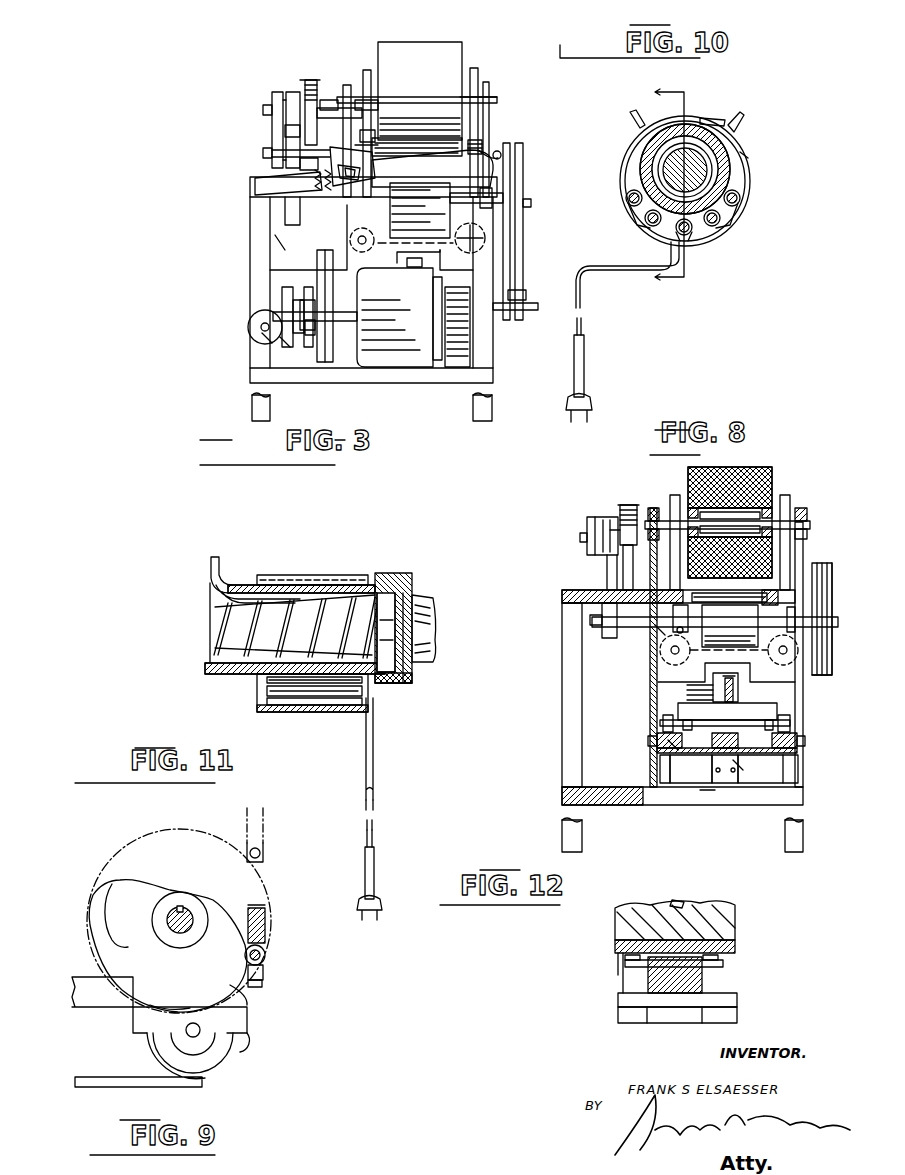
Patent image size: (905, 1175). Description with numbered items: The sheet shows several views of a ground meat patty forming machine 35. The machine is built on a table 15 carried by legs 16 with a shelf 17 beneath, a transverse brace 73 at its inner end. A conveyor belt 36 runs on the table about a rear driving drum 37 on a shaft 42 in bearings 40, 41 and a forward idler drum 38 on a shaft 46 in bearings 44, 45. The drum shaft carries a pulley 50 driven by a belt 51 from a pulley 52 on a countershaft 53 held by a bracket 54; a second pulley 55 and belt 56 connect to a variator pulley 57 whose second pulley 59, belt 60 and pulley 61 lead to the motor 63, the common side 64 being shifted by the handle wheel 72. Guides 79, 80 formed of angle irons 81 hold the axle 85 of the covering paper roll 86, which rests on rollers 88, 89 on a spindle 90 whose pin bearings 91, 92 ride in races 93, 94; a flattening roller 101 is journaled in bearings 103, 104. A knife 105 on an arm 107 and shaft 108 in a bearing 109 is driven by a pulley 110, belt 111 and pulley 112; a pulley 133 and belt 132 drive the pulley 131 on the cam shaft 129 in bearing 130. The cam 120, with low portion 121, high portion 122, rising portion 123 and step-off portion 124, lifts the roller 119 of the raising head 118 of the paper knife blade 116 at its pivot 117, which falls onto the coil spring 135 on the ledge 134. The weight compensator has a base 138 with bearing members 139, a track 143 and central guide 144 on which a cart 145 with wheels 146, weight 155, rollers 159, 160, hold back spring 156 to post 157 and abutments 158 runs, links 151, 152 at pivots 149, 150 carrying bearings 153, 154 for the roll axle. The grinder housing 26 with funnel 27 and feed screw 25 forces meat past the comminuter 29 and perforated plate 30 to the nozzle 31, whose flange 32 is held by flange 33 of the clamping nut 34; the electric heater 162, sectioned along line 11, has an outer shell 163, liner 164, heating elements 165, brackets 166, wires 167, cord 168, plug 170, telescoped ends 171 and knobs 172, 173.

In FIG. 10, the section line 11 is at (683, 184).
In FIG. 8, the table 15 is at (565, 592).
In FIG. 9, the table 15 is at (103, 1000).
In FIG. 3, the legs or supports 16 is at (490, 420).
In FIG. 8, the legs or supports 16 is at (788, 850).
In FIG. 3, the shelf 17 is at (460, 385).
In FIG. 8, the shelf 17 is at (615, 805).
In FIG. 11, the feed screw 25 is at (215, 625).
In FIG. 11, the meat grinder housing 26 is at (228, 580).
In FIG. 11, the feeding funnel or neck 27 is at (213, 560).
In FIG. 11, the cutter or comminuter 29 is at (383, 590).
In FIG. 11, the perforated plate 30 is at (412, 615).
In FIG. 11, the delivery nozzle 31 is at (435, 620).
In FIG. 11, the radial flange 32 is at (395, 600).
In FIG. 11, the inwardly projecting radial flange 33 is at (412, 682).
In FIG. 11, the clamping nut 34 is at (400, 690).
In FIG. 3, the patty forming machine 35 is at (516, 38).
In FIG. 8, the patty forming machine 35 is at (564, 496).
In FIG. 8, the conveyor belt 36 is at (705, 645).
In FIG. 9, the conveyor belt 36 is at (205, 1080).
In FIG. 8, the pulley or drum 37 is at (777, 650).
In FIG. 3, the pulley or drum 38 is at (435, 195).
In FIG. 9, the pulley or drum 38 is at (235, 1045).
In FIG. 8, the bearing 40 is at (797, 630).
In FIG. 8, the bearing 41 is at (660, 625).
In FIG. 3, the shaft 42 is at (530, 203).
In FIG. 3, the bearing 44 is at (500, 193).
In FIG. 3, the bearing 45 is at (330, 240).
In FIG. 9, the bearing 45 is at (240, 1018).
In FIG. 3, the shaft 46 is at (465, 245).
In FIG. 9, the shaft 46 is at (188, 1040).
In FIG. 3, the pulley 50 is at (512, 220).
In FIG. 8, the pulley 50 is at (825, 655).
In FIG. 3, the belt 51 is at (522, 240).
In FIG. 3, the pulley 52 is at (522, 296).
In FIG. 3, the countershaft 53 is at (517, 312).
In FIG. 3, the bracket 54 is at (455, 340).
In FIG. 3, the second pulley 55 is at (305, 290).
In FIG. 3, the belt 56 is at (325, 362).
In FIG. 3, the pulley 57 is at (333, 345).
In FIG. 3, the second pulley 59 is at (283, 340).
In FIG. 3, the belt 60 is at (300, 335).
In FIG. 3, the pulley 61 is at (268, 325).
In FIG. 3, the motor 63 is at (415, 330).
In FIG. 3, the common side 64 is at (318, 345).
In FIG. 3, the handle wheel 72 is at (268, 338).
In FIG. 3, the transverse brace 73 is at (262, 270).
In FIG. 8, the transverse brace 73 is at (580, 650).
In FIG. 3, the guide 79 is at (474, 68).
In FIG. 8, the guide 79 is at (786, 495).
In FIG. 3, the guide 80 is at (367, 70).
In FIG. 8, the guide 80 is at (675, 495).
In FIG. 3, the angle iron 81 is at (347, 82).
In FIG. 8, the angle iron 81 is at (654, 510).
In FIG. 8, the shaft or axle 85 is at (772, 512).
In FIG. 3, the roll of prepared paper 86 is at (430, 48).
In FIG. 8, the roll of prepared paper 86 is at (772, 467).
In FIG. 8, the anti-friction roller 88 is at (772, 592).
In FIG. 8, the anti-friction roller 89 is at (650, 572).
In FIG. 8, the shaft or spindle 90 is at (730, 626).
In FIG. 8, the pin bearing 91 is at (770, 600).
In FIG. 8, the pin bearing 92 is at (673, 615).
In FIG. 8, the race 93 is at (827, 612).
In FIG. 8, the race 94 is at (668, 632).
In FIG. 3, the roller or drum 101 is at (447, 140).
In FIG. 3, the bearing 103 is at (478, 145).
In FIG. 3, the bearing 104 is at (360, 150).
In FIG. 3, the knife 105 is at (365, 135).
In FIG. 3, the arm 107 is at (360, 105).
In FIG. 3, the shaft 108 is at (330, 100).
In FIG. 3, the bearing 109 is at (310, 80).
In FIG. 8, the bearing 109 is at (628, 505).
In FIG. 3, the pulley 110 is at (305, 88).
In FIG. 8, the pulley 110 is at (623, 510).
In FIG. 3, the belt 111 is at (288, 130).
In FIG. 8, the belt 111 is at (605, 556).
In FIG. 3, the pulley 112 is at (290, 215).
In FIG. 8, the pulley 112 is at (600, 610).
In FIG. 3, the paper knife or knife blade 116 is at (485, 155).
In FIG. 3, the pivot 117 is at (498, 152).
In FIG. 3, the raising head 118 is at (355, 152).
In FIG. 9, the raising head 118 is at (265, 918).
In FIG. 3, the roller 119 is at (362, 165).
In FIG. 9, the roller 119 is at (265, 955).
In FIG. 3, the cam 120 is at (390, 203).
In FIG. 9, the cam 120 is at (238, 985).
In FIG. 9, the low arcuate portion 121 is at (183, 884).
In FIG. 9, the high arcuate portion 122 is at (160, 1010).
In FIG. 9, the rising cam portion 123 is at (248, 940).
In FIG. 9, the declining or step off portion 124 is at (112, 930).
In FIG. 3, the shaft 129 is at (264, 152).
In FIG. 9, the shaft 129 is at (195, 905).
In FIG. 3, the bearing 130 is at (310, 180).
In FIG. 3, the pulley 131 is at (310, 162).
In FIG. 3, the belt 132 is at (270, 95).
In FIG. 3, the pulley 133 is at (275, 104).
In FIG. 8, the pulley 133 is at (585, 525).
In FIG. 3, the ledge 134 is at (278, 240).
In FIG. 3, the compressible coil spring 135 is at (318, 190).
In FIG. 8, the base 138 is at (703, 805).
In FIG. 8, the bearing member 139 is at (655, 758).
In FIG. 8, the track member 143 is at (672, 745).
In FIG. 8, the central guide member 144 is at (720, 730).
In FIG. 12, the central guide member 144 is at (660, 985).
In FIG. 8, the miniature cart 145 is at (727, 750).
In FIG. 12, the miniature cart 145 is at (735, 945).
In FIG. 8, the wheel 146 is at (790, 727).
In FIG. 8, the pivot 149 is at (655, 740).
In FIG. 8, the pivot 150 is at (785, 745).
In FIG. 3, the arm or link 151 is at (355, 240).
In FIG. 8, the arm or link 151 is at (655, 690).
In FIG. 8, the arm or link 152 is at (803, 695).
In FIG. 8, the anti-friction bearing 153 is at (645, 515).
In FIG. 8, the anti-friction bearing 154 is at (802, 512).
In FIG. 8, the weight 155 is at (712, 705).
In FIG. 12, the weight 155 is at (715, 922).
In FIG. 8, the hold back spring 156 is at (729, 689).
In FIG. 12, the hold back spring 156 is at (690, 902).
In FIG. 3, the post 157 is at (397, 260).
In FIG. 8, the post 157 is at (738, 765).
In FIG. 12, the post 157 is at (720, 1020).
In FIG. 8, the abutment 158 is at (660, 725).
In FIG. 8, the lateral guiding anti-friction roller 159 is at (755, 769).
In FIG. 12, the lateral guiding anti-friction roller 159 is at (725, 963).
In FIG. 8, the lateral guiding anti-friction roller 160 is at (691, 769).
In FIG. 12, the lateral guiding anti-friction roller 160 is at (628, 963).
In FIG. 10, the electric heater 162 is at (785, 199).
In FIG. 11, the electric heater 162 is at (341, 538).
In FIG. 10, the outer shell 163 is at (745, 170).
In FIG. 11, the outer shell 163 is at (262, 697).
In FIG. 10, the heat insulating liner 164 is at (748, 157).
In FIG. 11, the heat insulating liner 164 is at (300, 712).
In FIG. 10, the heating element 165 is at (696, 242).
In FIG. 11, the heating element 165 is at (345, 700).
In FIG. 10, the bracket 166 is at (722, 225).
In FIG. 11, the bracket 166 is at (262, 685).
In FIG. 10, the wire 167 is at (637, 212).
In FIG. 11, the wire 167 is at (375, 700).
In FIG. 10, the electric cord 168 is at (640, 278).
In FIG. 11, the electric cord 168 is at (375, 778).
In FIG. 10, the pronged plug 170 is at (590, 402).
In FIG. 11, the pronged plug 170 is at (368, 912).
In FIG. 10, the telescoped ends 171 is at (712, 122).
In FIG. 10, the knob 172 is at (635, 122).
In FIG. 10, the knob 173 is at (735, 130).